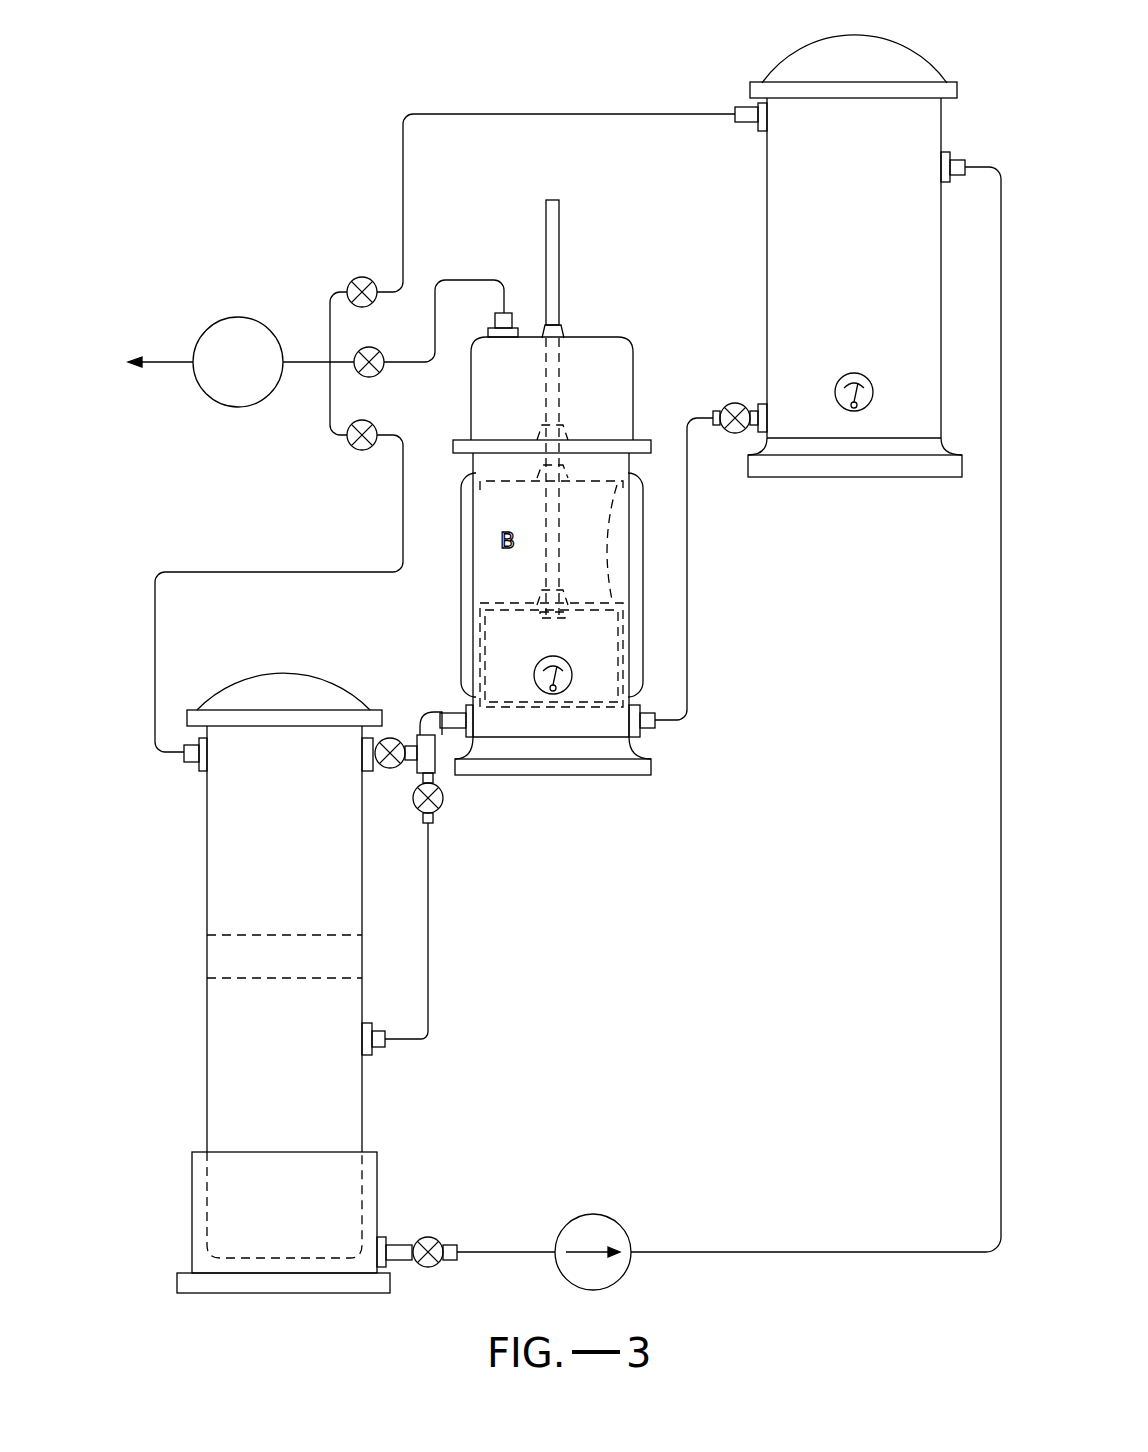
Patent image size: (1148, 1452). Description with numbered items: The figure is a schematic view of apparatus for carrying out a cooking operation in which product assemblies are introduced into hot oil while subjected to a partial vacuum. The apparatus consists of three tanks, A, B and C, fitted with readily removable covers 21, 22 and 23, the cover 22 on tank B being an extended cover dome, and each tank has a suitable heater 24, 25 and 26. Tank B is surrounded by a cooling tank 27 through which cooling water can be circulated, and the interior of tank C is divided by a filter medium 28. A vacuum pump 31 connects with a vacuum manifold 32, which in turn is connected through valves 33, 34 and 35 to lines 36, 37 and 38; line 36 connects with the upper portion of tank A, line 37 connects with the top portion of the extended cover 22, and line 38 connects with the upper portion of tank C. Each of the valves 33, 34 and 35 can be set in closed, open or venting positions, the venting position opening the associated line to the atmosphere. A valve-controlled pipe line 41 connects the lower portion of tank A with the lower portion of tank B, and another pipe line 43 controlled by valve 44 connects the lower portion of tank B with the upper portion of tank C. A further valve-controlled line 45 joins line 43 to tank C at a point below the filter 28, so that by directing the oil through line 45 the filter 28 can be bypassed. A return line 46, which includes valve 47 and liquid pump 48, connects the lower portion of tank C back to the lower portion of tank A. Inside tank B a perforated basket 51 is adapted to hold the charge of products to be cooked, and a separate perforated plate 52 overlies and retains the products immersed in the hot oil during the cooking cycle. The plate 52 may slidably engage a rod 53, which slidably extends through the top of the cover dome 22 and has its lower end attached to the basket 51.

The removable cover 21 is at (912, 66).
The extended cover 22 is at (578, 350).
The removable cover 23 is at (315, 680).
The heater 24 is at (940, 453).
The heater 25 is at (637, 752).
The heater 26 is at (372, 1197).
The cooling tank 27 is at (648, 570).
The filter medium 28 is at (335, 955).
The vacuum pump 31 is at (228, 318).
The vacuum manifold 32 is at (328, 325).
The valve 33 is at (357, 278).
The valve 34 is at (374, 348).
The valve 35 is at (351, 447).
The line 36 is at (403, 138).
The line 37 is at (474, 280).
The line 38 is at (403, 518).
The pipe line 41 is at (688, 505).
The pipe line 43 is at (420, 762).
The valve 44 is at (392, 735).
The valve controlled line 45 is at (432, 875).
The line 46 is at (830, 1252).
The valve 47 is at (442, 1240).
The liquid pump 48 is at (618, 1222).
The perforated basket 51 is at (620, 640).
The perforated plate 52 is at (609, 530).
The rod 53 is at (560, 258).